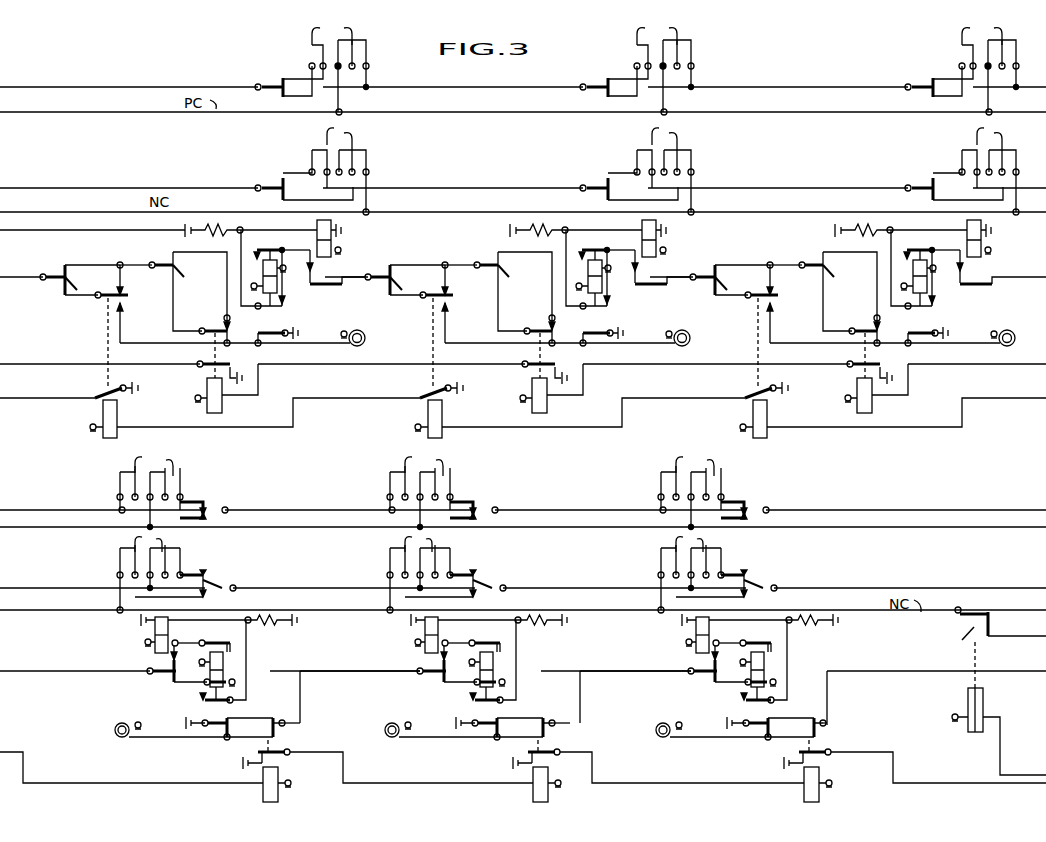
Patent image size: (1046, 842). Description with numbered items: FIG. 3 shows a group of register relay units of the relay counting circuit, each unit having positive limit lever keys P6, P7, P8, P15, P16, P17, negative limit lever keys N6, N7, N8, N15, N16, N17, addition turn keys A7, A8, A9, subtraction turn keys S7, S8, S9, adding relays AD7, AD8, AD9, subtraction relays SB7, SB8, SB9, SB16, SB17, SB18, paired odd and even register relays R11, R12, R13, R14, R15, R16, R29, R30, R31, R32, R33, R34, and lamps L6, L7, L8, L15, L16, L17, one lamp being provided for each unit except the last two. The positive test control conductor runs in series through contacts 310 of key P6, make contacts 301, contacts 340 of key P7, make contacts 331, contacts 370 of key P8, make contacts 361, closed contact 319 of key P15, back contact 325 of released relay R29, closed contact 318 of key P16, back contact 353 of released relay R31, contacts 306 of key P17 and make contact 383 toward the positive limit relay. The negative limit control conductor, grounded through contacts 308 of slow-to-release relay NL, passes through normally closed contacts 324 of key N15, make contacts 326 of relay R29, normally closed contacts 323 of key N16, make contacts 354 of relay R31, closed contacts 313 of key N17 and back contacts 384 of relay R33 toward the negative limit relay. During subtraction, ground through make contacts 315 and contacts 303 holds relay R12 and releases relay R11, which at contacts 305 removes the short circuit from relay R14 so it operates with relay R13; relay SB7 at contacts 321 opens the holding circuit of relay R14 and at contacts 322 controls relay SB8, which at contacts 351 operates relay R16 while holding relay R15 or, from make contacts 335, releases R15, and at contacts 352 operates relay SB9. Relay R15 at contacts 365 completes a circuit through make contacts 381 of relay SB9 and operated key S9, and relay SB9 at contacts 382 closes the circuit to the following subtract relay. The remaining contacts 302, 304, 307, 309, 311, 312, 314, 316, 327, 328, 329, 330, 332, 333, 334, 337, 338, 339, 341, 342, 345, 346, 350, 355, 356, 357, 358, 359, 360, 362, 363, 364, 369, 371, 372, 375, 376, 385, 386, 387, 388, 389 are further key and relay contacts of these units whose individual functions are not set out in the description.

The make contacts 301 is at (928, 79).
The contact 302 is at (938, 183).
The contacts 303 is at (932, 246).
The contact 304 is at (952, 281).
The contacts of relay R11 305 is at (933, 329).
The contacts of key P17 306 is at (731, 469).
The contact 307 is at (650, 466).
The contacts of relay NL 308 is at (983, 647).
The contact 309 is at (1020, 36).
The contacts of key P6 310 is at (943, 39).
The contact 311 is at (885, 328).
The contact 312 is at (784, 365).
The closed contacts of key N17 313 is at (724, 553).
The contact 314 is at (648, 547).
The make contacts 315 is at (986, 275).
The contact 316 is at (955, 138).
The closed contact of key P16 318 is at (379, 466).
The closed contact of key P15 319 is at (125, 468).
The contacts of relay SB7 321 is at (757, 326).
The contacts of relay SB7 322 is at (739, 388).
The normally closed contacts of key N16 323 is at (377, 547).
The normally closed contacts of key N15 324 is at (123, 551).
The back contact of relay R29 325 is at (209, 507).
The make contacts of relay R29 326 is at (213, 588).
The contact 327 is at (233, 643).
The contact 328 is at (203, 700).
The contact 329 is at (203, 722).
The contact 330 is at (150, 670).
The make contacts 331 is at (603, 79).
The contact 332 is at (613, 183).
The contact 333 is at (607, 246).
The contact 334 is at (627, 281).
The make contacts 335 is at (608, 329).
The contact 337 is at (276, 721).
The contact 338 is at (278, 754).
The contact 339 is at (696, 36).
The contacts of key P7 340 is at (618, 39).
The contact 341 is at (560, 328).
The contact 342 is at (459, 365).
The contact 345 is at (661, 275).
The contact 346 is at (693, 140).
The contact 350 is at (373, 664).
The contacts of relay SB8 351 is at (432, 326).
The contacts of relay SB8 352 is at (414, 388).
The back contact of relay R31 353 is at (483, 502).
The make contacts of relay R31 354 is at (487, 582).
The contact 355 is at (496, 646).
The contact 356 is at (471, 665).
The contact 357 is at (459, 719).
The contact 358 is at (532, 723).
The contact 359 is at (550, 764).
The contact 360 is at (644, 673).
The make contacts 361 is at (274, 80).
The contact 362 is at (271, 183).
The contact 363 is at (258, 258).
The contact 364 is at (287, 302).
The contacts of relay R15 365 is at (267, 334).
The contact 369 is at (355, 40).
The contacts of key P8 370 is at (311, 43).
The contact 371 is at (222, 327).
The contact 372 is at (231, 369).
The contact 375 is at (336, 267).
The contact 376 is at (353, 143).
The contacts of relay SB9 381 is at (107, 326).
The contacts of relay SB9 382 is at (93, 392).
The make contact 383 is at (754, 502).
The back contacts of relay R33 384 is at (758, 582).
The contact 385 is at (750, 639).
The contact 386 is at (746, 662).
The contact 387 is at (730, 714).
The contact 388 is at (806, 729).
The contact 389 is at (821, 764).
The positive limit lever key P6 is at (989, 64).
The positive limit lever key P7 is at (664, 64).
The positive limit lever key P8 is at (343, 13).
The relay N6 is at (989, 167).
The relay N7 is at (664, 167).
The relay N8 is at (339, 167).
The positive limit lever key P15 is at (150, 489).
The positive limit lever key P16 is at (420, 489).
The positive limit lever key P17 is at (691, 489).
The negative limit lever key N15 is at (160, 573).
The negative limit lever key N16 is at (430, 573).
The negative limit lever key N17 is at (701, 573).
The register relay R11 is at (886, 269).
The register relay R12 is at (957, 237).
The register relay R13 is at (561, 269).
The register relay R14 is at (632, 237).
The register relay R15 is at (263, 278).
The register relay R16 is at (307, 237).
The register relay R29 is at (224, 671).
The register relay R30 is at (155, 630).
The register relay R31 is at (509, 671).
The register relay R32 is at (405, 633).
The register relay R33 is at (774, 671).
The register relay R34 is at (676, 633).
The subtract key S7 is at (710, 275).
The switch S8 is at (385, 275).
The subtract key S9 is at (60, 272).
The relay A7 is at (823, 289).
The relay A8 is at (498, 289).
The relay A9 is at (173, 261).
The lamp L6 is at (1002, 329).
The lamp L7 is at (677, 329).
The lamp L8 is at (360, 330).
The lamp L15 is at (125, 722).
The lamp L16 is at (429, 719).
The lamp L17 is at (700, 719).
The subtraction relay SB7 is at (769, 419).
The subtraction relay SB8 is at (444, 419).
The subtraction relay SB9 is at (117, 416).
The subtraction relay SB16 is at (263, 797).
The subtraction relay SB17 is at (520, 786).
The subtraction relay SB18 is at (791, 786).
The relay AD7 is at (876, 378).
The relay AD8 is at (551, 378).
The relay AD9 is at (222, 410).
The slow-to-release relay NL is at (968, 700).